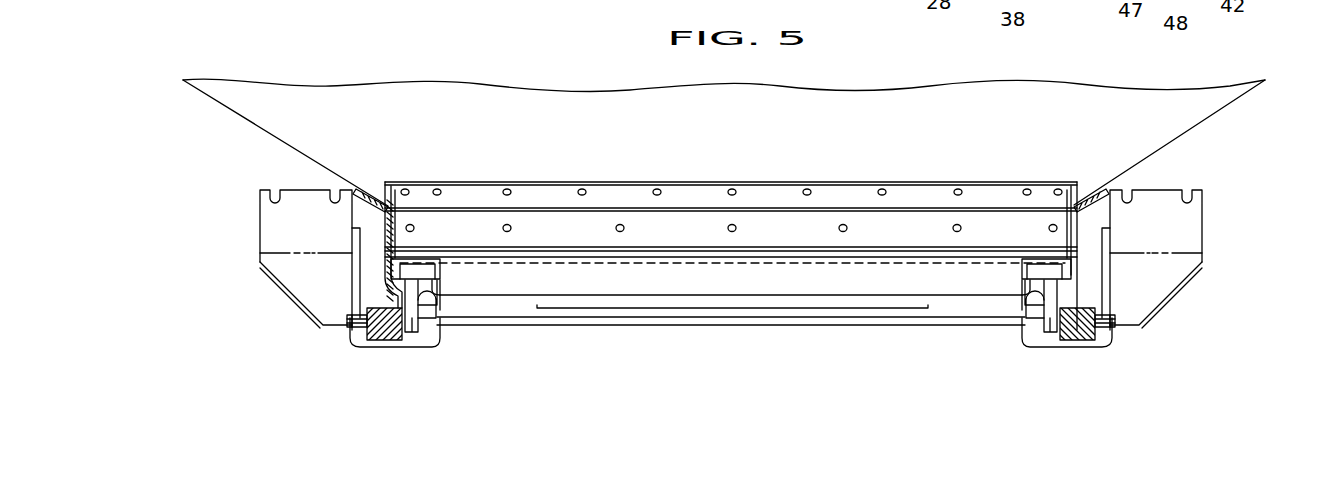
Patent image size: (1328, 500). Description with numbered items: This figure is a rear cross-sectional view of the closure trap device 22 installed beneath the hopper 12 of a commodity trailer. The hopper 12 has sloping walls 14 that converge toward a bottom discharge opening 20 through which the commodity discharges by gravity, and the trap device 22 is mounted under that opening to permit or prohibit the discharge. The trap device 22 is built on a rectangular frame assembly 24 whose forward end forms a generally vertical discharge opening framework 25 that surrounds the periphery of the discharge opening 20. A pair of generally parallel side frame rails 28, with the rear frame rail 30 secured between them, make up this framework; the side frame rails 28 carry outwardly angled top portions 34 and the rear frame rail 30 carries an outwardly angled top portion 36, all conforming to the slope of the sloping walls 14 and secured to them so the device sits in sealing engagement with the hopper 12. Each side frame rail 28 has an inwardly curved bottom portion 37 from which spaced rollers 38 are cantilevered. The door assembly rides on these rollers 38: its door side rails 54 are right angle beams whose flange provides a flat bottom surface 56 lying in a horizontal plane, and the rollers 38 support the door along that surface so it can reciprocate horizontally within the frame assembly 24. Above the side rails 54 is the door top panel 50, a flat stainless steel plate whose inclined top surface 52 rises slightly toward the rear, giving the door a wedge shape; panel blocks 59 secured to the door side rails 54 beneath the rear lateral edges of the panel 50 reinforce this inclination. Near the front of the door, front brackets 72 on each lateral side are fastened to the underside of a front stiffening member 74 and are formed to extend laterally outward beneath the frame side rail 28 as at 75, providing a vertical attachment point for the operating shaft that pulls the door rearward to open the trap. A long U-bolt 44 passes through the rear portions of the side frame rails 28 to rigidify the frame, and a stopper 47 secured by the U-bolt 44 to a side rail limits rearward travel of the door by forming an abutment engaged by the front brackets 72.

The hopper 12 is at (232, 112).
The sloping walls 14 is at (1225, 117).
The bottom discharge opening 20 is at (565, 115).
The closure trap device 22 is at (748, 340).
The frame assembly 24 is at (1083, 280).
The discharge opening framework 25 is at (731, 214).
The side frame rails 28 is at (382, 232).
The rear frame rail 30 is at (731, 307).
The outwardly angled top portion 34 is at (376, 203).
The outwardly angled top portion 36 is at (838, 198).
The inwardly curved bottom portion 37 is at (385, 310).
The rollers 38 is at (412, 330).
The long U-bolt 44 is at (606, 318).
The stopper 47 is at (372, 343).
The door top panel 50 is at (893, 262).
The inclined top surface 52 is at (780, 252).
The door side rails 54 is at (463, 298).
The flat bottom surface 56 is at (435, 340).
The panel blocks 59 is at (418, 266).
The front brackets 72 is at (293, 265).
The front stiffening member 74 is at (686, 300).
The lateral extension of front bracket 75 is at (395, 345).